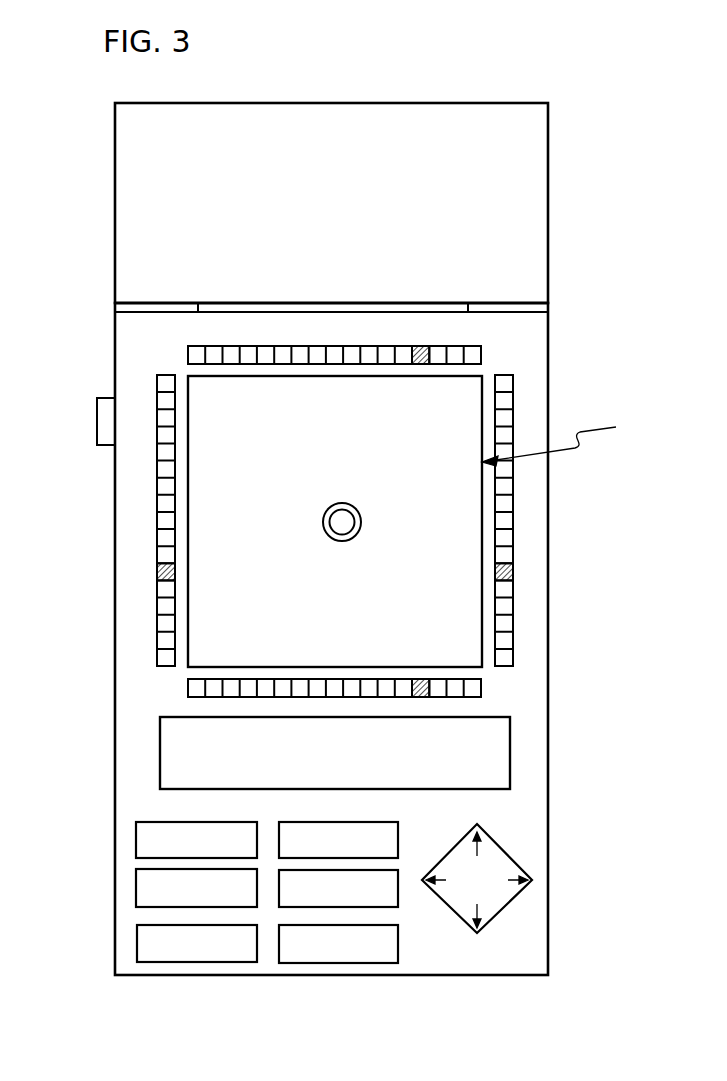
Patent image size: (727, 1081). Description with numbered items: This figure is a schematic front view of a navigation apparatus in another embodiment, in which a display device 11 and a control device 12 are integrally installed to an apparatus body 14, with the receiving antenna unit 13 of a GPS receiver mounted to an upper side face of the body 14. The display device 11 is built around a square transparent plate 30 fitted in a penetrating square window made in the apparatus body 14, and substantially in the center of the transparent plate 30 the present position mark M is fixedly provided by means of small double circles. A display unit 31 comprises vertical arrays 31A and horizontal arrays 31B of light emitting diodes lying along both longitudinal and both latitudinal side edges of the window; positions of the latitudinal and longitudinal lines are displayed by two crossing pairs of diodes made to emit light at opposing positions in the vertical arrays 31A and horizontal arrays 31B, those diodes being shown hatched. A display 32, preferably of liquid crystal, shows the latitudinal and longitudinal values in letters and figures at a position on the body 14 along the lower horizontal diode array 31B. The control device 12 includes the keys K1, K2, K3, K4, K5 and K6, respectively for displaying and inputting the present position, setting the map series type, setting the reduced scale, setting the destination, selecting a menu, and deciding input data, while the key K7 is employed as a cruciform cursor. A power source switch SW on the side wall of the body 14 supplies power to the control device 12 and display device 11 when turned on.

The receiving antenna unit 13 is at (546, 200).
The apparatus body 14 is at (536, 588).
The display device 11 is at (566, 439).
The control device 12 is at (333, 933).
The transparent plate 30 is at (455, 533).
The display unit 31 is at (354, 541).
The vertical arrays 31A is at (510, 413).
The horizontal arrays 31B is at (481, 353).
The display 32 is at (497, 753).
The present position mark M is at (323, 523).
The power source switch SW is at (97, 425).
The key K1 is at (136, 845).
The key K2 is at (136, 891).
The key K3 is at (137, 946).
The key K4 is at (398, 858).
The key K5 is at (287, 905).
The key K6 is at (346, 966).
The key K7 is at (507, 892).